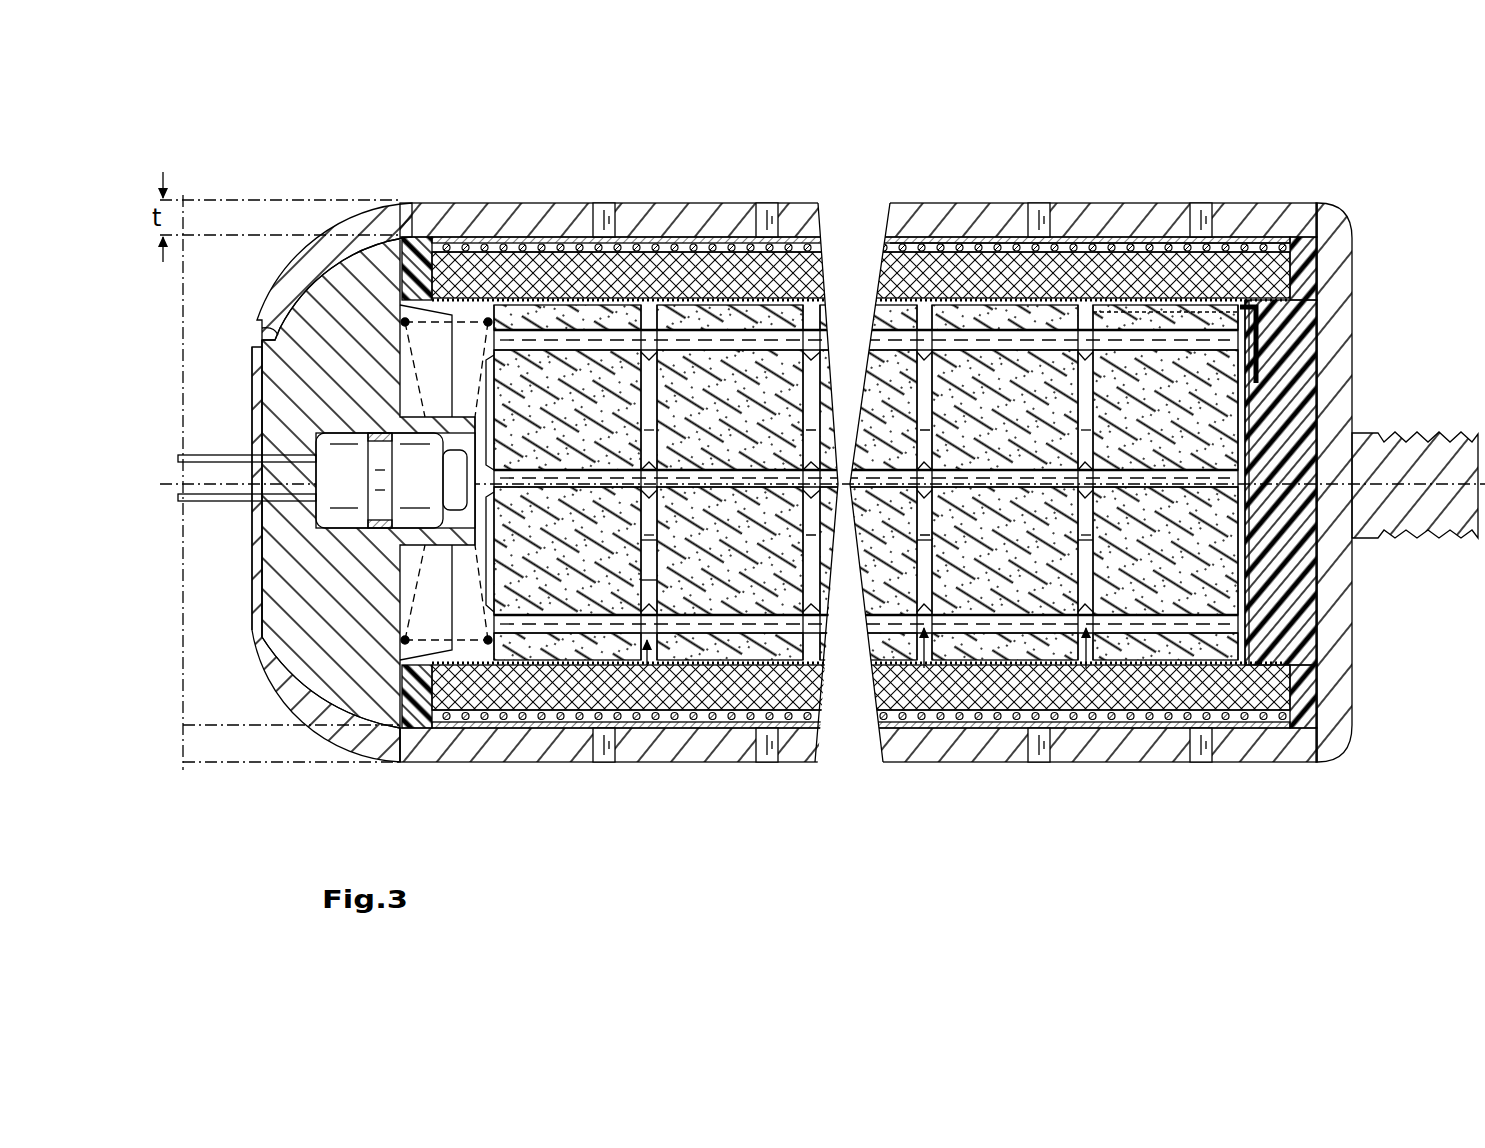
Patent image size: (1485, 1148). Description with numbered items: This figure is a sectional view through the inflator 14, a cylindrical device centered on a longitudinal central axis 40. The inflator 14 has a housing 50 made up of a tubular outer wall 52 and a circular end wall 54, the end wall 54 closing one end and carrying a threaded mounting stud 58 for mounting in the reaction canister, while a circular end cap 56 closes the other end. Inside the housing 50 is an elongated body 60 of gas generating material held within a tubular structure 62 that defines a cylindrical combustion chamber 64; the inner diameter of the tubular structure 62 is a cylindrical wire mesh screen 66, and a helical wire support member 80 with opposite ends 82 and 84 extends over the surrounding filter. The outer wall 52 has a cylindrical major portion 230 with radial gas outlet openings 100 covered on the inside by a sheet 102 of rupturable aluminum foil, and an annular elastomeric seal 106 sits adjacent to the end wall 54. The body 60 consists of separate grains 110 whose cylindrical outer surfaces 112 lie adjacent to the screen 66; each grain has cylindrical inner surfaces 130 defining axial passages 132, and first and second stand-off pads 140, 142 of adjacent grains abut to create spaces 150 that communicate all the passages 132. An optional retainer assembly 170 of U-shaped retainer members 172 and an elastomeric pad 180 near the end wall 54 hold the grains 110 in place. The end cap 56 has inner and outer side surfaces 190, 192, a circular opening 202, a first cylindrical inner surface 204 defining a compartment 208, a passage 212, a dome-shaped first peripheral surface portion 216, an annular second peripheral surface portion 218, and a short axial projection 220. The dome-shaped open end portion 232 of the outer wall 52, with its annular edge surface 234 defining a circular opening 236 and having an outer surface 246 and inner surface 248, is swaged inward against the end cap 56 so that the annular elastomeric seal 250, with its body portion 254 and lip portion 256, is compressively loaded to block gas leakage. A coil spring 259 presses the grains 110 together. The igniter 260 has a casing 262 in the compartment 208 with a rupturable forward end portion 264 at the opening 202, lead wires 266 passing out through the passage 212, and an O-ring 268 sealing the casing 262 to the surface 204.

The inflator 14 is at (240, 150).
The longitudinal central axis 40 is at (170, 450).
The housing 50 is at (537, 198).
The tubular outer wall 52 is at (541, 242).
The end wall 54 is at (1338, 352).
The end cap 56 is at (262, 402).
The threaded mounting stud 58 is at (1413, 522).
The body of gas generating material 60 is at (682, 215).
The tubular structure 62 is at (709, 258).
The combustion chamber 64 is at (866, 482).
The wire mesh screen 66 is at (965, 285).
The support member 80 is at (942, 236).
The end of support member 82 is at (445, 238).
The end of support member 84 is at (1278, 248).
The gas outlet openings 100 is at (616, 196).
The sheet of rupturable pressure controlling material 102 is at (920, 238).
The annular elastomeric seal 106 is at (1305, 230).
The grains 110 is at (525, 644).
The cylindrical outer surfaces 112 is at (587, 658).
The cylindrical inner surfaces 130 is at (628, 342).
The cylindrical passages 132 is at (492, 340).
The first stand-off pads 140 is at (650, 578).
The second stand-off pads 142 is at (648, 548).
The spaces 150 is at (647, 665).
The retainer assembly 170 is at (1318, 300).
The retainer members 172 is at (1298, 262).
The elastomeric pad 180 is at (1300, 593).
The inner side surface 190 is at (413, 725).
The outer side surface 192 is at (256, 571).
The circular opening 202 is at (478, 448).
The first cylindrical inner surface 204 is at (490, 523).
The cylindrical compartment 208 is at (379, 480).
The passage 212 is at (262, 490).
The first peripheral surface portion 216 is at (296, 228).
The second peripheral surface portion 218 is at (272, 330).
The axial projection 220 is at (262, 594).
The major portion 230 is at (562, 248).
The open end portion 232 is at (268, 223).
The annular edge surface 234 is at (270, 322).
The circular opening 236 is at (250, 376).
The outer surface 246 is at (283, 708).
The inner surface 248 is at (322, 672).
The annular elastomeric seal 250 is at (416, 232).
The body portion 254 is at (457, 244).
The lip portion 256 is at (353, 244).
The coil spring 259 is at (486, 256).
The igniter 260 is at (480, 502).
The casing 262 is at (332, 437).
The forward end portion 264 is at (458, 477).
The lead wires 266 is at (225, 456).
The O-ring 268 is at (362, 520).